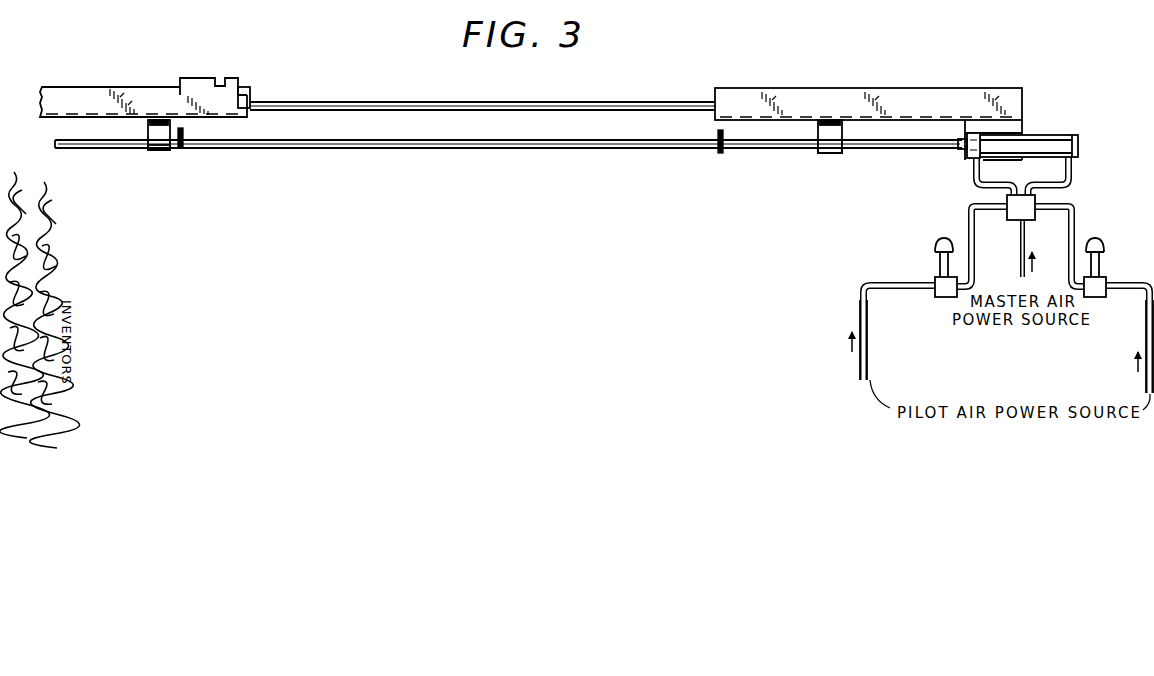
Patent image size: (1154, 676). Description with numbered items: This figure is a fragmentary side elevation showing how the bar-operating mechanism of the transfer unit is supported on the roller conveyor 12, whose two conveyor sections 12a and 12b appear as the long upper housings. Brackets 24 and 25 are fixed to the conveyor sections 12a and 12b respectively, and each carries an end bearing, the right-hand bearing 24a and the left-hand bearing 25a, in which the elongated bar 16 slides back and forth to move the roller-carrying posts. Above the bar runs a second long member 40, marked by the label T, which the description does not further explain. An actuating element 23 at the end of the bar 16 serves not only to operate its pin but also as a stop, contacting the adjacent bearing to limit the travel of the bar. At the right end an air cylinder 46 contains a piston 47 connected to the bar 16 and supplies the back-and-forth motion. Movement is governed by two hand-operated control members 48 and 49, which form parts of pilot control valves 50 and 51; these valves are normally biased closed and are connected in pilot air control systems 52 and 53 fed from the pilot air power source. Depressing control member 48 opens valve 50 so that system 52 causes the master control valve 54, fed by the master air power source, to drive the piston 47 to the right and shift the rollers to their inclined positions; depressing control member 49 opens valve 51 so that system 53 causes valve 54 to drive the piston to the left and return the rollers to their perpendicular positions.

The track assembly 12 is at (40, 132).
The conveyor section 12a is at (928, 93).
The conveyor section 12b is at (84, 97).
The elongated bar 16 is at (490, 149).
The actuating element 23 is at (187, 133).
The bracket 24 is at (834, 130).
The end bearing 24a is at (838, 153).
The bracket 25 is at (160, 127).
The end bearing 25a is at (164, 150).
The upper rod 40 is at (580, 101).
The air cylinder 46 is at (1050, 133).
The piston 47 is at (968, 161).
The control member 48 is at (936, 242).
The control member 49 is at (1096, 240).
The pilot control valve 50 is at (936, 279).
The pilot control valve 51 is at (1108, 280).
The pilot air control system 52 is at (860, 310).
The pilot air control system 53 is at (1147, 335).
The master control valve 54 is at (1007, 212).
The tube T is at (446, 95).